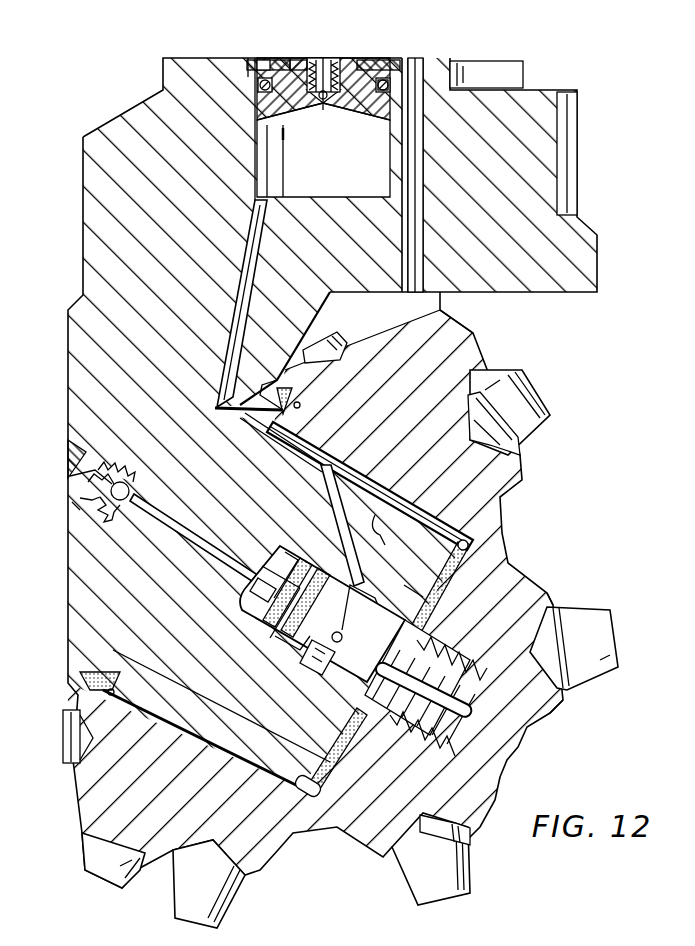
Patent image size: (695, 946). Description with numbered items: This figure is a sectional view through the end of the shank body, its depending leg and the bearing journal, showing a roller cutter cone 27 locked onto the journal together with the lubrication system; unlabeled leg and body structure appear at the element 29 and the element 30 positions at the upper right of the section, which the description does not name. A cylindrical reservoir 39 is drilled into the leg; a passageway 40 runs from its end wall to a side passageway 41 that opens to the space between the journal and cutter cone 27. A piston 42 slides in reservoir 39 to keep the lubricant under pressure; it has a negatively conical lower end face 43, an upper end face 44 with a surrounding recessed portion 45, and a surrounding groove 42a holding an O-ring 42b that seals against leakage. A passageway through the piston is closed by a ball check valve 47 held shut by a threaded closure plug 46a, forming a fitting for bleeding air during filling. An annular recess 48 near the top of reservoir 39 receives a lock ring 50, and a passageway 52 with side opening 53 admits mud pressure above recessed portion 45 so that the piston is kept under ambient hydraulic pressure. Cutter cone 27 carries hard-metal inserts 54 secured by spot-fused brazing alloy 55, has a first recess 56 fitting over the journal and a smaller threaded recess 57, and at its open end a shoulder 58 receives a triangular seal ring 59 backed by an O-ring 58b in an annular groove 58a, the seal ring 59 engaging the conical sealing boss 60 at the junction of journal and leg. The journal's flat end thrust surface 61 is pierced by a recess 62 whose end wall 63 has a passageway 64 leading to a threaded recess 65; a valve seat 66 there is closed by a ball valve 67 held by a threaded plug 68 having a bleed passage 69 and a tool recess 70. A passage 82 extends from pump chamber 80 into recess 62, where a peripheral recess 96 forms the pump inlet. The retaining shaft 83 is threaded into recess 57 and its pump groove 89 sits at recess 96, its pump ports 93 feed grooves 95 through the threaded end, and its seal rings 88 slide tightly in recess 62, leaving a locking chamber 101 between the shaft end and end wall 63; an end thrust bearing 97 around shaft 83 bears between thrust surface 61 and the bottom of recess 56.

The roller cutter cone 27 is at (516, 525).
The plug 29 is at (530, 62).
The passage 30 is at (578, 155).
The cylindrical recess or reservoir 39 is at (255, 175).
The passageway 40 is at (236, 298).
The side passageway 41 is at (248, 428).
The piston 42 is at (255, 108).
The surrounding groove 42a is at (388, 92).
The O-ring 42b is at (390, 83).
The lower end face 43 is at (275, 122).
The upper end face 44 is at (302, 58).
The recessed portion 45 is at (285, 68).
The threaded closure plug 46a is at (323, 58).
The check valve 47 is at (323, 110).
The annular recess 48 is at (247, 64).
The lock ring 50 is at (257, 58).
The passageway 52 is at (413, 292).
The side opening 53 is at (375, 62).
The inserts 54 is at (550, 420).
The brazing alloy 55 is at (352, 350).
The first recess 56 is at (368, 462).
The threaded recess 57 is at (400, 735).
The shoulder 58 is at (296, 430).
The annular groove 58a is at (114, 695).
The O-ring 58b is at (300, 405).
The seal ring 59 is at (265, 390).
The conical sealing boss 60 is at (210, 412).
The end thrust surface 61 is at (432, 590).
The recess 62 is at (338, 705).
The end wall 63 is at (237, 608).
The passageway 64 is at (212, 545).
The threaded recess 65 is at (104, 518).
The valve seat 66 is at (130, 489).
The ball valve 67 is at (135, 480).
The threaded plug 68 is at (90, 500).
The bleed passage 69 is at (112, 470).
The recess 70 is at (70, 476).
The pump chamber 80 is at (388, 534).
The passage 82 is at (322, 520).
The shaft 83 is at (322, 676).
The seal rings 88 is at (275, 640).
The second undercut region 89 is at (296, 660).
The pump ports 93 is at (342, 636).
The grooves 95 is at (462, 712).
The peripheral recess 96 is at (372, 598).
The end thrust bearing 97 is at (450, 582).
The locking chamber 101 is at (270, 565).